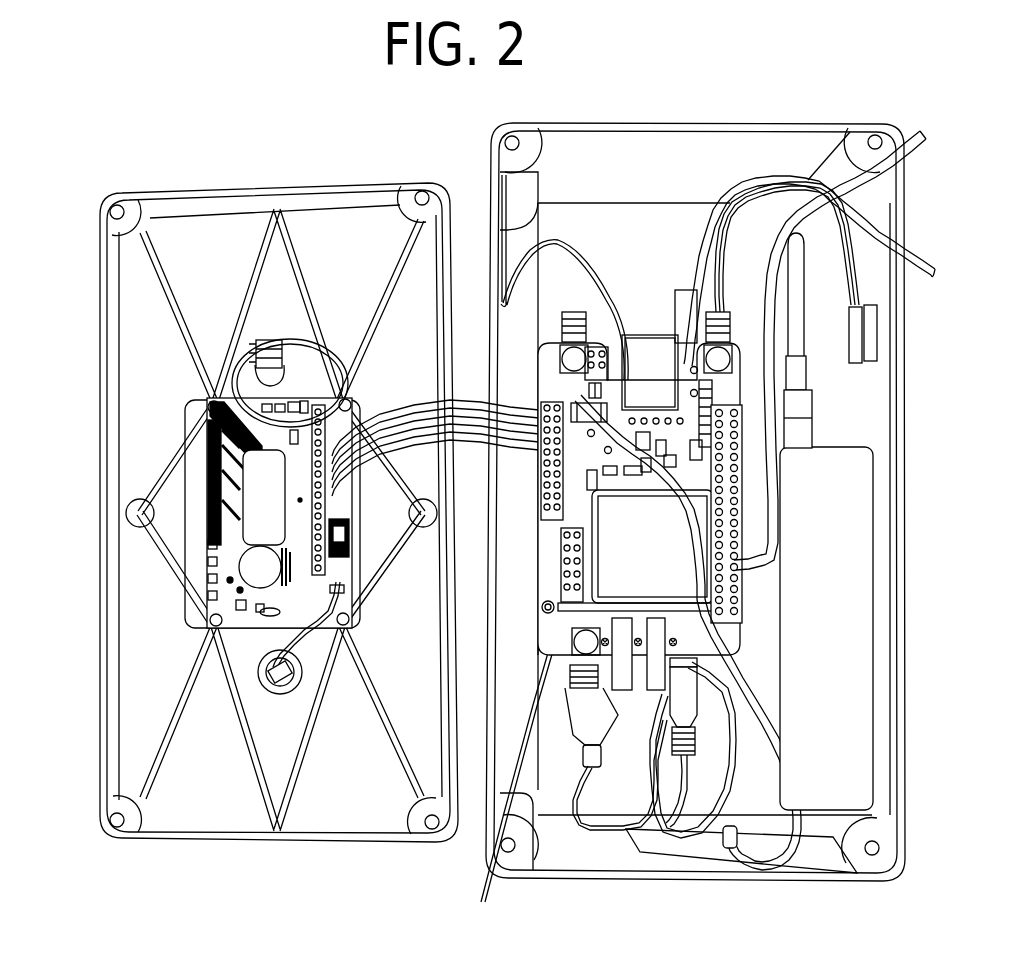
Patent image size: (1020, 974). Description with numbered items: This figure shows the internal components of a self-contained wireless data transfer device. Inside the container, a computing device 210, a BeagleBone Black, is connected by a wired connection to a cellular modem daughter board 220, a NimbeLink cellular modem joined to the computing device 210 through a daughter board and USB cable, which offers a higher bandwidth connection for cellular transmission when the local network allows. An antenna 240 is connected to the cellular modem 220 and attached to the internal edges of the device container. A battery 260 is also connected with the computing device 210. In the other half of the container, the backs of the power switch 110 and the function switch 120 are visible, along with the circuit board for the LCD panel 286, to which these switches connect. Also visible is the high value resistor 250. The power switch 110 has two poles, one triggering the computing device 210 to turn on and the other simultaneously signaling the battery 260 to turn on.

The power switch 110 is at (268, 340).
The function switch 120 is at (272, 673).
The computing device 210 is at (691, 521).
The cellular modem daughter board 220 is at (718, 567).
The antenna 240 is at (690, 832).
The high value resistor 250 is at (633, 607).
The battery 260 is at (838, 693).
The circuit board for the LCD panel 286 is at (190, 520).